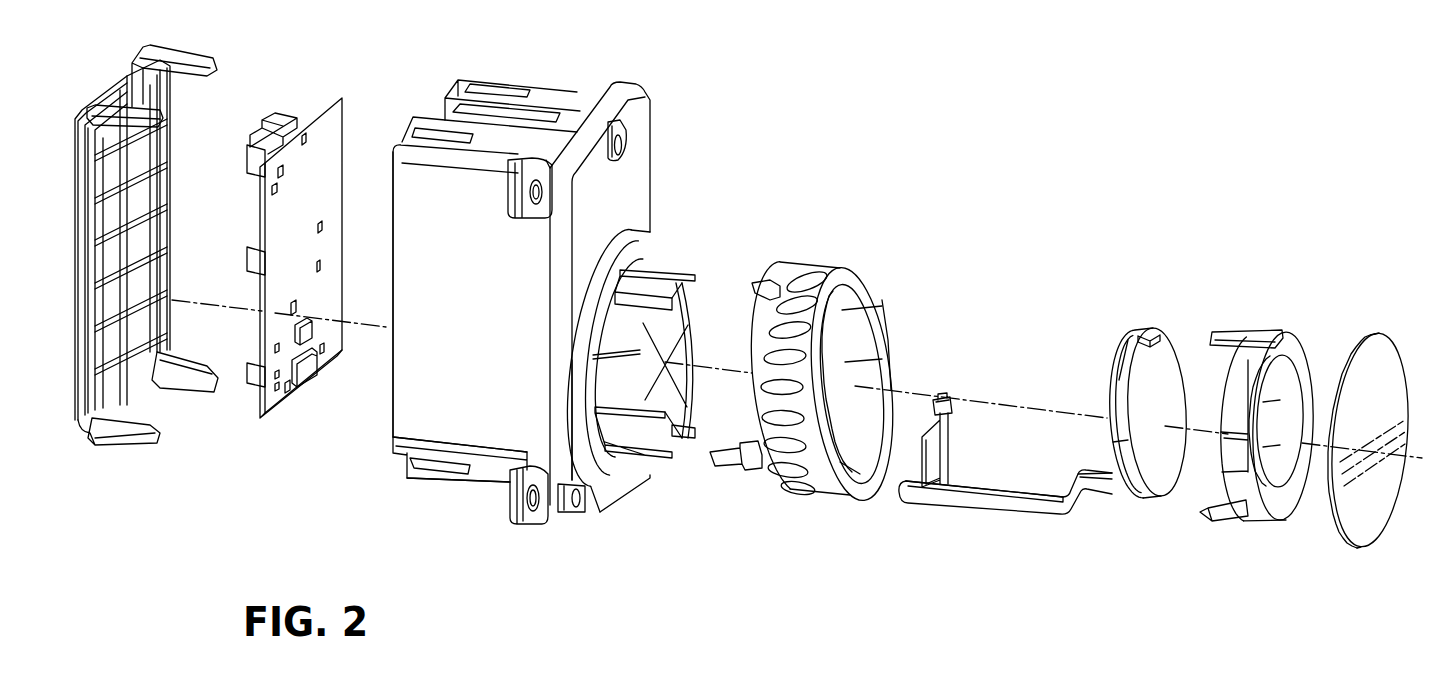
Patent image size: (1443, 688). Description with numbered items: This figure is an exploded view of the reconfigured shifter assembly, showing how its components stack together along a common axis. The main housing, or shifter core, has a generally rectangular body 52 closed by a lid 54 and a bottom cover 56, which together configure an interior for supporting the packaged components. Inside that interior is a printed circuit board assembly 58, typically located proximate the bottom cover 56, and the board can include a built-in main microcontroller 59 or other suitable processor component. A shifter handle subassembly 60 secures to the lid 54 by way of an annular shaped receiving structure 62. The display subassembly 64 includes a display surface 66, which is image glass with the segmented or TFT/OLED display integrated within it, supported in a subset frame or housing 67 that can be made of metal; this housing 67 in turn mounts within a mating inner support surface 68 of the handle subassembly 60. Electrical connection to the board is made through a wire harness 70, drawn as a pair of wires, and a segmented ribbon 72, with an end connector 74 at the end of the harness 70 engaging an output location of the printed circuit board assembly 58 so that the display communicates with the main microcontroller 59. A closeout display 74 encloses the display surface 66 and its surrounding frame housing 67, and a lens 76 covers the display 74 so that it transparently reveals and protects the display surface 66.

The rectangular body 52 is at (500, 432).
The lid 54 is at (650, 171).
The bottom cover 56 is at (75, 372).
The printed circuit board assembly 58 is at (337, 130).
The main microcontroller 59 is at (305, 370).
The shifter handle subassembly 60 is at (831, 273).
The annular shaped receiving structure 62 is at (640, 398).
The display subassembly 64 is at (1043, 353).
The display surface 66 is at (1148, 478).
The subset frame housing 67 is at (1124, 363).
The inner support surface 68 is at (887, 308).
The wire harness 70 is at (1045, 490).
The segmented ribbon 72 is at (988, 497).
The end connector / closeout display 74 is at (942, 395).
The lens 76 is at (1397, 373).